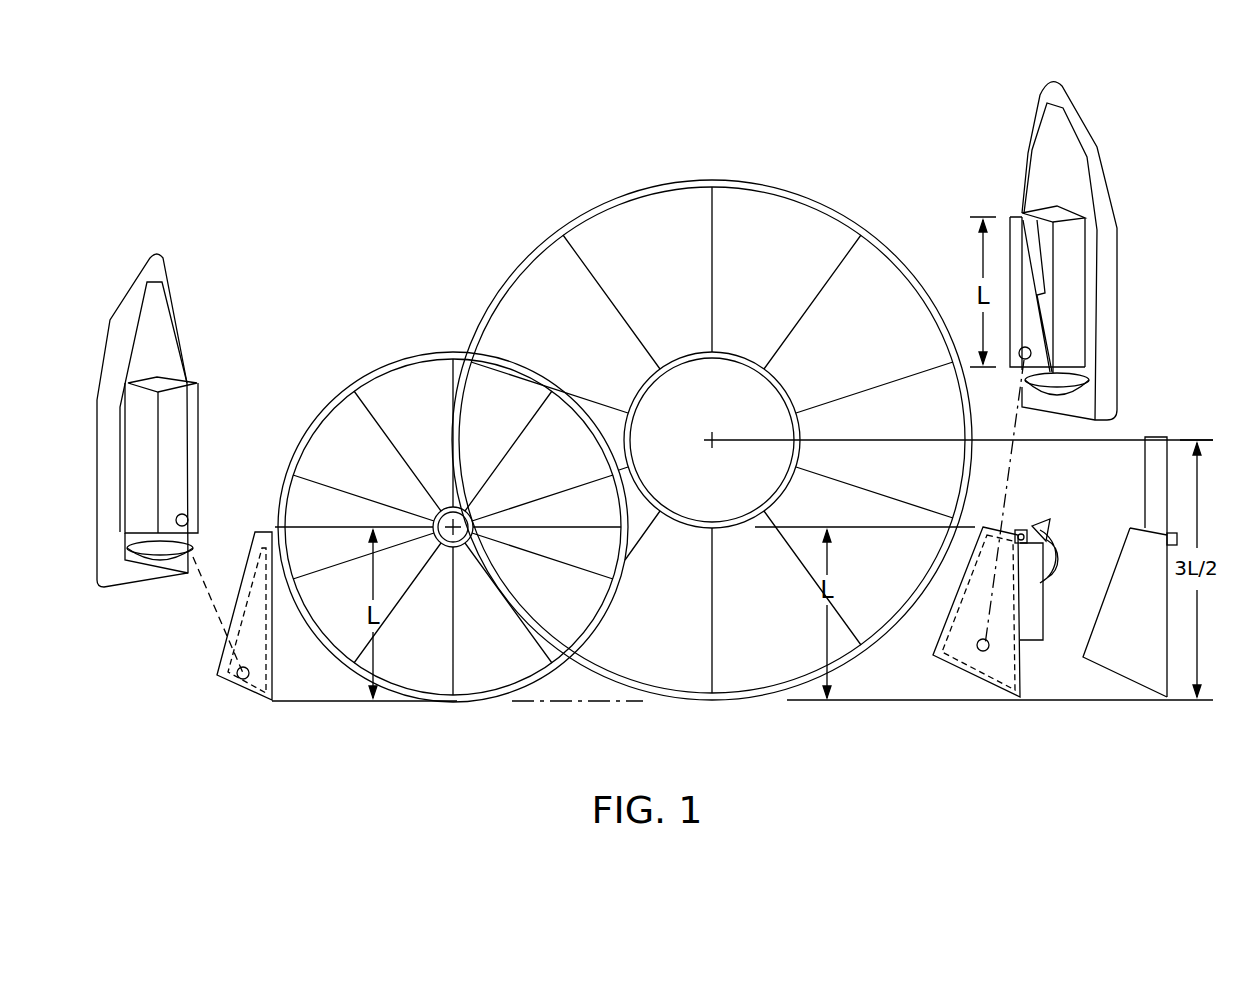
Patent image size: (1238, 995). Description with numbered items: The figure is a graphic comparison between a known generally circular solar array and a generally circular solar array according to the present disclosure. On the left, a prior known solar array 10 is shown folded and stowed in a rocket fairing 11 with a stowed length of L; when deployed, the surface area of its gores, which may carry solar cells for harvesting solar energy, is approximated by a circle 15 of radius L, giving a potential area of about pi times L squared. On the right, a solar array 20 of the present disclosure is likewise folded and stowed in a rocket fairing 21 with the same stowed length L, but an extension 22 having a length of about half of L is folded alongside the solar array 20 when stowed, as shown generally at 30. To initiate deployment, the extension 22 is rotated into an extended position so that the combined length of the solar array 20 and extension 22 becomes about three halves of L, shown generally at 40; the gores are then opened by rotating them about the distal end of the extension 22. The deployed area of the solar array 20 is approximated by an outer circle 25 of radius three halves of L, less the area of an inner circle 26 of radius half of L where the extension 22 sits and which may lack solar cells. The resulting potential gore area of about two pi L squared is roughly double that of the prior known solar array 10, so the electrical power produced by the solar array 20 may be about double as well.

The prior known solar array 10 is at (180, 527).
The rocket fairing 11 is at (180, 320).
The circle 15 is at (392, 361).
The solar array 20 is at (1022, 217).
The rocket fairing 21 is at (1035, 130).
The extension 22 is at (1040, 258).
The outer circle 25 is at (823, 208).
The inner circle 26 is at (688, 372).
The stowed configuration 30 is at (983, 710).
The extended configuration 40 is at (1158, 718).